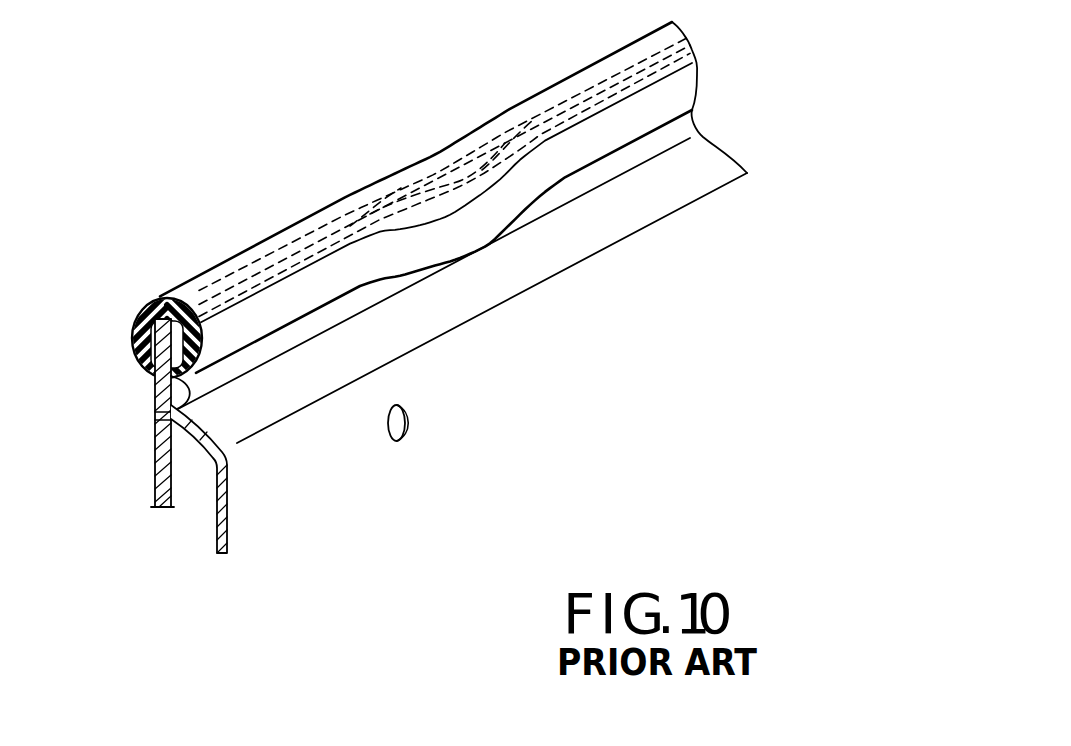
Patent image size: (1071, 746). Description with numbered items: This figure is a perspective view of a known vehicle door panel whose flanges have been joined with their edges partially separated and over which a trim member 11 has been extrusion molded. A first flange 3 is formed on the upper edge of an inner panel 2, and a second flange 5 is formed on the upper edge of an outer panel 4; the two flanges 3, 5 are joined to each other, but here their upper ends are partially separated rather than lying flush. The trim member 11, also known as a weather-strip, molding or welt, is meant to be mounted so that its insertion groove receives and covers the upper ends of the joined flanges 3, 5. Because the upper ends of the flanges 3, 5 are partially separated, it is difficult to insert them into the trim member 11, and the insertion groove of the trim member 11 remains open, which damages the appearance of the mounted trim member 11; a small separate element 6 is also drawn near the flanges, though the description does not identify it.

The trim member 11 is at (260, 246).
The inner panel 2 is at (152, 485).
The first flange 3 is at (157, 384).
The outer panel 4 is at (228, 496).
The second flange 5 is at (156, 417).
The pellet 6 is at (407, 430).